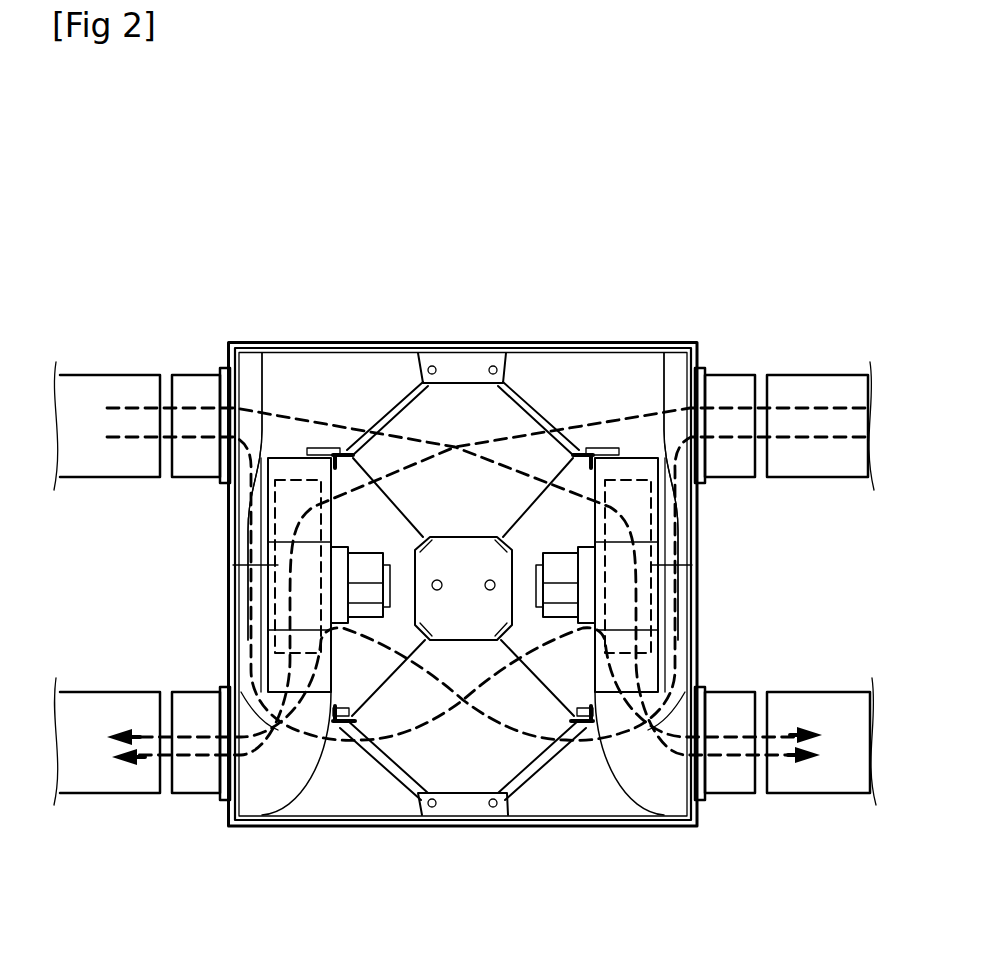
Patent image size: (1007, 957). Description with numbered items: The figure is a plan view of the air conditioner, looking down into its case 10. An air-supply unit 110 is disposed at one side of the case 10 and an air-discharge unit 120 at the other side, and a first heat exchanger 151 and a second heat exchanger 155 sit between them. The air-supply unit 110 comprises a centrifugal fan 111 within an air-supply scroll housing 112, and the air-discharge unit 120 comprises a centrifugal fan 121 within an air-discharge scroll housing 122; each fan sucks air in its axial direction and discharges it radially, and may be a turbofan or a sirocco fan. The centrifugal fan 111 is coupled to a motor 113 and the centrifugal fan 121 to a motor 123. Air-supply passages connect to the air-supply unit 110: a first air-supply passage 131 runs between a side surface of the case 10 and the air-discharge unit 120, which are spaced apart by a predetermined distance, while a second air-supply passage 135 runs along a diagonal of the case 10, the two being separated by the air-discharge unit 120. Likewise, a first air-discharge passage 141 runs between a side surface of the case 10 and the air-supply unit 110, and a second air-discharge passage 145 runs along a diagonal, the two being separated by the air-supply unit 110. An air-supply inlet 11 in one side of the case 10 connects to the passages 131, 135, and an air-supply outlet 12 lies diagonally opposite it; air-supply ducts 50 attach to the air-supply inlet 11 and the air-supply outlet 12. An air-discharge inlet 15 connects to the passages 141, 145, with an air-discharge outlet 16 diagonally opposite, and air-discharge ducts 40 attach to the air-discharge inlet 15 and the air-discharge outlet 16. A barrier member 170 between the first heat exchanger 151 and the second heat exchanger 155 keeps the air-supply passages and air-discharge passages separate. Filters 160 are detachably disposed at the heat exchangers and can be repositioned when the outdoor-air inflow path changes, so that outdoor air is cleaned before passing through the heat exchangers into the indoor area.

The case 10 is at (313, 345).
The air-supply inlet 11 is at (720, 377).
The air-supply outlet 12 is at (195, 795).
The air-discharge inlet 15 is at (187, 377).
The air-discharge outlet 16 is at (737, 795).
The air-discharge ducts 40 is at (103, 377).
The air-supply ducts 50 is at (812, 377).
The air-supply unit 110 is at (205, 584).
The centrifugal fan 111 is at (233, 565).
The air-supply scroll housing 112 is at (241, 690).
The motor 113 is at (375, 614).
The air-discharge unit 120 is at (721, 584).
The centrifugal fan 121 is at (692, 565).
The air-discharge scroll housing 122 is at (686, 690).
The motor 123 is at (585, 625).
The first air-supply passage 131 is at (660, 455).
The second air-supply passage 135 is at (600, 410).
The first air-discharge passage 141 is at (263, 350).
The second air-discharge passage 145 is at (345, 420).
The first heat exchanger 151 is at (460, 396).
The second heat exchanger 155 is at (467, 772).
The filters 160 is at (538, 392).
The barrier member 170 is at (453, 618).